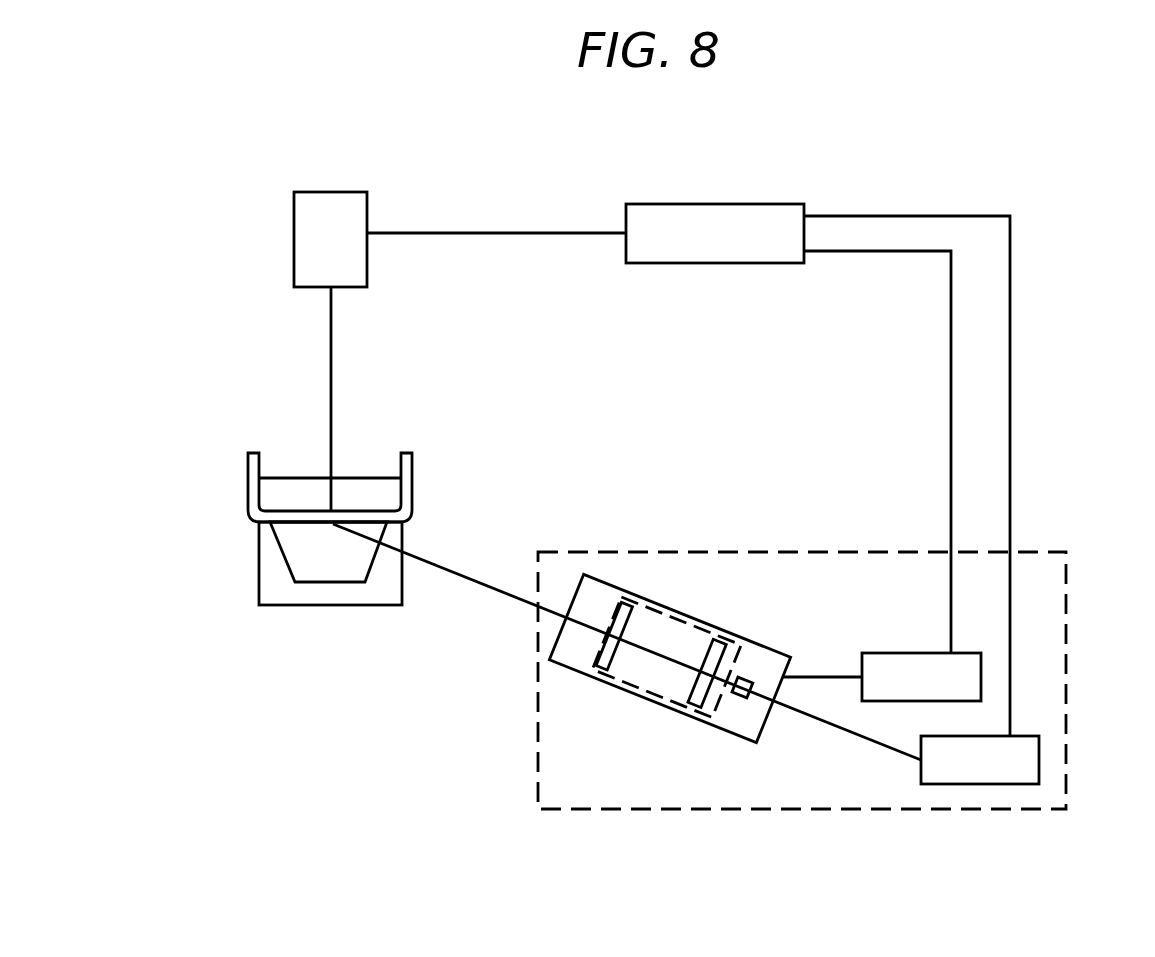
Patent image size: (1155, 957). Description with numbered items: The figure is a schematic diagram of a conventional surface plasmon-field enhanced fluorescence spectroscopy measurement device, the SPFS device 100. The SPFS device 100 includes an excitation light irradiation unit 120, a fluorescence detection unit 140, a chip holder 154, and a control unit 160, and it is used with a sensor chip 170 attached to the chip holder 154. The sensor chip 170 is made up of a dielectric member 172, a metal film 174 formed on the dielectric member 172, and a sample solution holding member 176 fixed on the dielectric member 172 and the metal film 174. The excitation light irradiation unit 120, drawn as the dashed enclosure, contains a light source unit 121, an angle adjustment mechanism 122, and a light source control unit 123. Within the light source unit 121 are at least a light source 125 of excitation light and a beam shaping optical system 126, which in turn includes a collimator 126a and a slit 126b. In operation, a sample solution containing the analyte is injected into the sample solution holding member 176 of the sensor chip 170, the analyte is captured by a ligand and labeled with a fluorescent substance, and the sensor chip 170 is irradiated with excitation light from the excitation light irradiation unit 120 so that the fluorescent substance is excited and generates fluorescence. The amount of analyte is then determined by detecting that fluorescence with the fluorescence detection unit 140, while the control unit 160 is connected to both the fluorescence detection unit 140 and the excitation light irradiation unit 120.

The SPFS device 100 is at (1076, 121).
The excitation light irradiation unit 120 is at (743, 812).
The light source unit 121 is at (573, 658).
The angle adjustment mechanism 122 is at (880, 653).
The light source control unit 123 is at (978, 784).
The light source 125 is at (747, 678).
The beam shaping optical system 126 is at (650, 615).
The collimator 126a is at (697, 693).
The slit 126b is at (597, 680).
The fluorescence detection unit 140 is at (294, 240).
The chip holder 154 is at (360, 597).
The control unit 160 is at (722, 204).
The sensor chip 170 is at (307, 597).
The dielectric member 172 is at (323, 565).
The metal film 174 is at (307, 525).
The sample solution holding member 176 is at (256, 511).